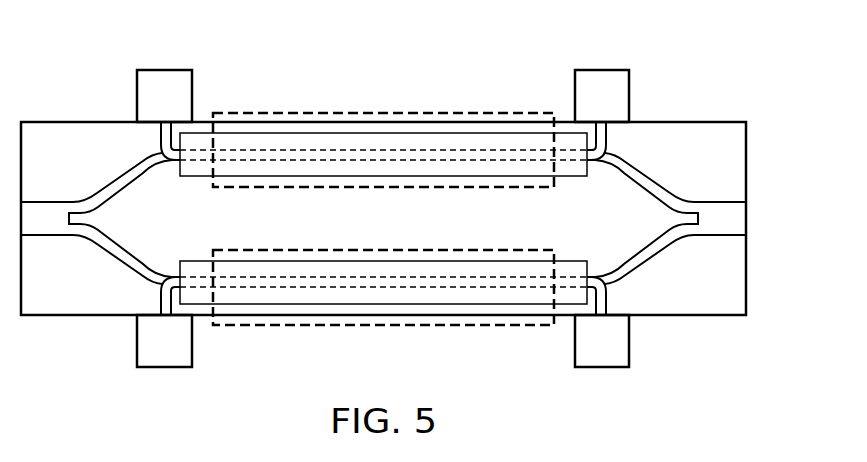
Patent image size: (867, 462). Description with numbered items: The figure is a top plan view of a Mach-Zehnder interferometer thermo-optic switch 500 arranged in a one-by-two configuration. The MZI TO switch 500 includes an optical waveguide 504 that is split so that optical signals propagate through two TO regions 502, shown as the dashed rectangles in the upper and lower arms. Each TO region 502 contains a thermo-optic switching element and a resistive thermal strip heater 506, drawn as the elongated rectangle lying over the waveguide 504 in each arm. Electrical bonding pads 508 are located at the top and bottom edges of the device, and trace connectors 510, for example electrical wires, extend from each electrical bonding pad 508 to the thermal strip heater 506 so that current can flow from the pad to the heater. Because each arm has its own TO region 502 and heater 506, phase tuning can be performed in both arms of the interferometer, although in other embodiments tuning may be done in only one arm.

The MZI TO switch 500 is at (690, 60).
The TO region 502 is at (289, 104).
The optical waveguide 504 is at (366, 148).
The thermal strip heater 506 is at (455, 133).
The electrical bonding pad 508 is at (163, 78).
The trace connector 510 is at (157, 136).